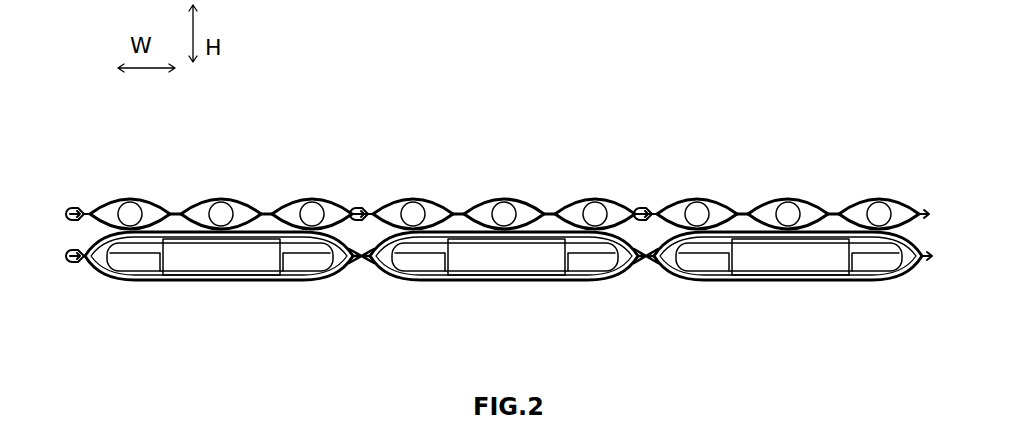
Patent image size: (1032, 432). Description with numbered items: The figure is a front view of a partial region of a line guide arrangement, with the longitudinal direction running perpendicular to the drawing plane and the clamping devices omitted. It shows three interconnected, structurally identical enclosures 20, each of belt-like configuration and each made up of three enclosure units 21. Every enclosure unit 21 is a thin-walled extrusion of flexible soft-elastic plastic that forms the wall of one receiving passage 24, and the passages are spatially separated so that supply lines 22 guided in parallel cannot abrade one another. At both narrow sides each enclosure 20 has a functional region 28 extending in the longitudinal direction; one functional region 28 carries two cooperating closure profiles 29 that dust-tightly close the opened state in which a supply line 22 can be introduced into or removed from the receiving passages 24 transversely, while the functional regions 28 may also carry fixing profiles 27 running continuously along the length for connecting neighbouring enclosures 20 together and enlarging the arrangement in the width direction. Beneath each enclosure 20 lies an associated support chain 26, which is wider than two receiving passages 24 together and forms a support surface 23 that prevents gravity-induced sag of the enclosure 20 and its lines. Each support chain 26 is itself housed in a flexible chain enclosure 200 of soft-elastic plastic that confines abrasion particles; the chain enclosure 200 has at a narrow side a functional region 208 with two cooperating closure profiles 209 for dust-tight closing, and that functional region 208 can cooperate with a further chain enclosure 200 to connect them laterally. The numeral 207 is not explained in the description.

The enclosure 20 is at (249, 116).
The enclosure unit 21 is at (108, 198).
The supply line 22 is at (217, 199).
The support surface 23 is at (460, 236).
The receiving passage 24 is at (297, 200).
The support chain 26 is at (215, 252).
The fixing profile 27 is at (66, 200).
The functional region 28 is at (359, 187).
The closure profile 29 is at (920, 207).
The chain enclosure 200 is at (630, 277).
The left lower connector 207 is at (67, 263).
The functional region 208 is at (368, 278).
The closure profile 209 is at (920, 257).